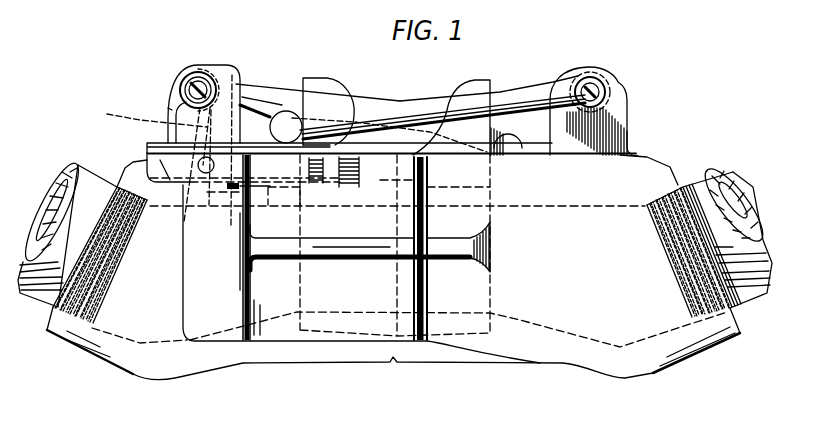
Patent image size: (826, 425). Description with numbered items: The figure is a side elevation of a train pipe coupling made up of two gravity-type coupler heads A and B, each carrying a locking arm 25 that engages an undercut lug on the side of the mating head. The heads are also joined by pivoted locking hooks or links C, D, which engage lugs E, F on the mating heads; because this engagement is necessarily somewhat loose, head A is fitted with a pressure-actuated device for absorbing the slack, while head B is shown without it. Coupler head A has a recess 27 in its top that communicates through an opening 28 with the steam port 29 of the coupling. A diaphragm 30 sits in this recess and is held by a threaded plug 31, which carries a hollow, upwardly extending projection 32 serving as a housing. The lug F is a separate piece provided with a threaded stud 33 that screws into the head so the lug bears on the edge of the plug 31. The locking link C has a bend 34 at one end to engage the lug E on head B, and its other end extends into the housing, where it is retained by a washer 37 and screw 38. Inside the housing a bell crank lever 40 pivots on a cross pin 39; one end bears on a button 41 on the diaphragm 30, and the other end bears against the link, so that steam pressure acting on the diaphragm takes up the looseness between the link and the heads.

The locking arm 25 is at (313, 341).
The recess 27 is at (209, 205).
The opening 28 is at (231, 225).
The steam port 29 is at (168, 322).
The diaphragm 30 is at (186, 204).
The threaded plug 31 is at (147, 150).
The projection 32 is at (168, 108).
The threaded stud 33 is at (347, 190).
The bend 34 is at (512, 148).
The washer 37 is at (181, 78).
The screw 38 is at (200, 76).
The cross pin 39 is at (160, 178).
The bell crank lever 40 is at (107, 114).
The button 41 is at (262, 165).
The coupler head A is at (123, 353).
The coupler head B is at (600, 363).
The locking link C is at (267, 96).
The locking link D is at (530, 87).
The lug E is at (484, 80).
The lug F is at (321, 78).